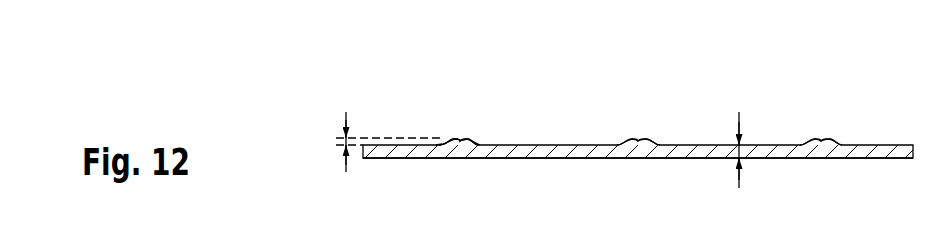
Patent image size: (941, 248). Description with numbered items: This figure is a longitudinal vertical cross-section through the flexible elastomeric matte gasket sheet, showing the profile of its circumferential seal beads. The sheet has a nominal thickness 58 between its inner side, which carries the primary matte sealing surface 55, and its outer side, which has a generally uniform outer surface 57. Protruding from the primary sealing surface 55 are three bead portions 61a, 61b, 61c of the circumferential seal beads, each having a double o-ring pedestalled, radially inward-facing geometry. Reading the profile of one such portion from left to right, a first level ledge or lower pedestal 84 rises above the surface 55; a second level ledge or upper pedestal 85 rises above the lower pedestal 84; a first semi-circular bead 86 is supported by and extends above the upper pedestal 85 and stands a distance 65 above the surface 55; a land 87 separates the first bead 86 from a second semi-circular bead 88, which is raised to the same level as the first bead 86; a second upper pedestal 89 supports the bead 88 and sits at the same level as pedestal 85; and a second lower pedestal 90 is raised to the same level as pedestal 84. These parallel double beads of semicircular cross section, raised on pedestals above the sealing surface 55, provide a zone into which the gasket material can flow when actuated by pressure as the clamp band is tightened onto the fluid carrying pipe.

The primary matte sealing surface 55 is at (590, 144).
The outer surface 57 is at (558, 160).
The nominal thickness 58 is at (740, 182).
The bead portion 61a is at (825, 128).
The bead portion 61b is at (648, 126).
The bead portion 61c is at (464, 124).
The distance 65 is at (345, 168).
The lower pedestal 84 is at (432, 142).
The upper pedestal 85 is at (438, 142).
The first semi-circular bead 86 is at (445, 137).
The land 87 is at (453, 140).
The second semi-circular bead 88 is at (470, 130).
The upper pedestal 89 is at (477, 137).
The lower pedestal 90 is at (480, 142).